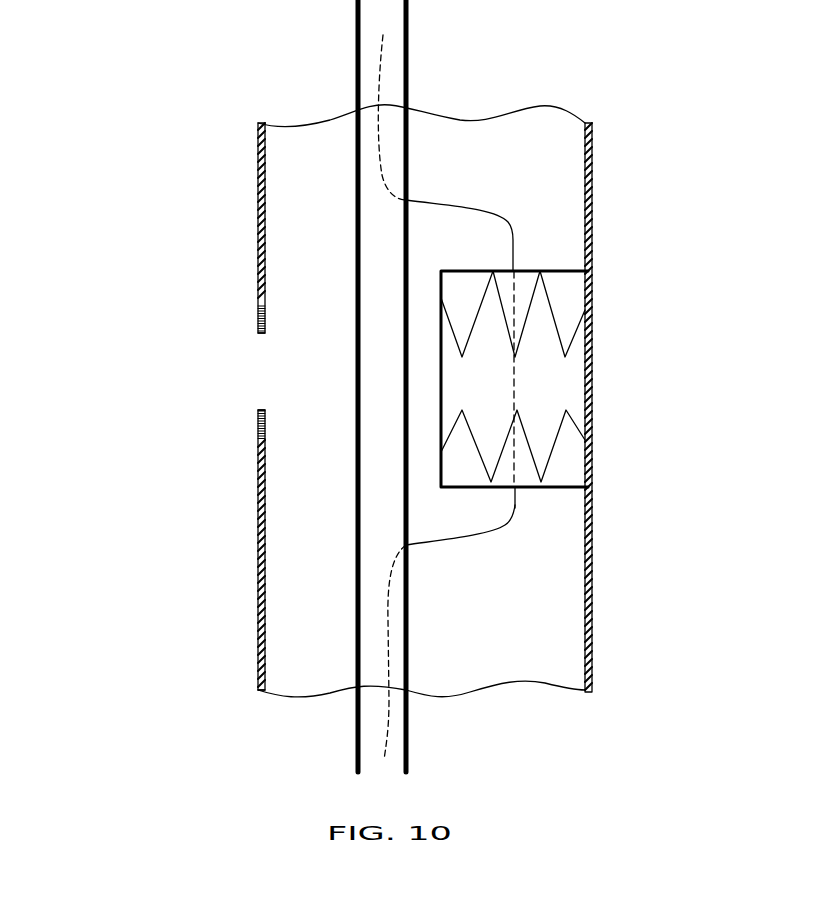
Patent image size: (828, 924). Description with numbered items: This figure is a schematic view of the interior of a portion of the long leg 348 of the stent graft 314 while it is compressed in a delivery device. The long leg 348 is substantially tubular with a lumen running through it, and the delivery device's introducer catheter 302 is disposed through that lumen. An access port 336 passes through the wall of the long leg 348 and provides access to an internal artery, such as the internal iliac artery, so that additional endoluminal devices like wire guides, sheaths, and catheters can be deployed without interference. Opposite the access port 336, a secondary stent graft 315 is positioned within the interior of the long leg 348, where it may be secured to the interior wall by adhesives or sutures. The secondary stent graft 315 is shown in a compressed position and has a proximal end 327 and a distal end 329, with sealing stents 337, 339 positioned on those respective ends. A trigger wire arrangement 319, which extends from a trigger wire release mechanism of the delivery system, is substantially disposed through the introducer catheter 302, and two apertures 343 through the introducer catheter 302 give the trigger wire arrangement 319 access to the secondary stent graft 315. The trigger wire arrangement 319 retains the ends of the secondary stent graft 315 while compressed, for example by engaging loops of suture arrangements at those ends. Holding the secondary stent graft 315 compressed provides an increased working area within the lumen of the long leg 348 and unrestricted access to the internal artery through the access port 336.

The introducer catheter 302 is at (358, 34).
The stent graft 314 is at (183, 142).
The secondary stent graft 315 is at (567, 363).
The trigger wire arrangement 319 is at (515, 505).
The proximal end 327 is at (548, 271).
The distal end 329 is at (536, 487).
The access port 336 is at (252, 387).
The sealing stent 337 is at (580, 312).
The sealing stent 339 is at (578, 425).
The apertures 343 is at (406, 200).
The long leg 348 is at (258, 670).